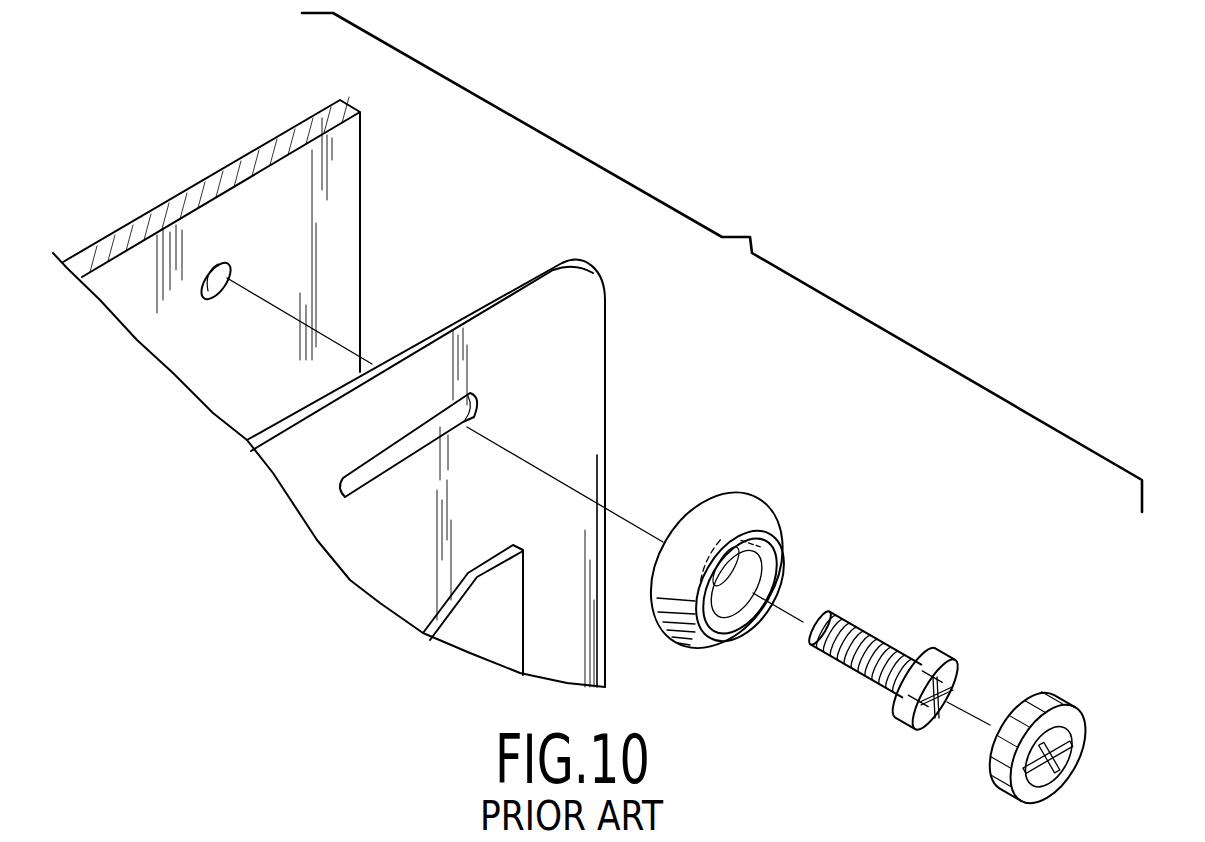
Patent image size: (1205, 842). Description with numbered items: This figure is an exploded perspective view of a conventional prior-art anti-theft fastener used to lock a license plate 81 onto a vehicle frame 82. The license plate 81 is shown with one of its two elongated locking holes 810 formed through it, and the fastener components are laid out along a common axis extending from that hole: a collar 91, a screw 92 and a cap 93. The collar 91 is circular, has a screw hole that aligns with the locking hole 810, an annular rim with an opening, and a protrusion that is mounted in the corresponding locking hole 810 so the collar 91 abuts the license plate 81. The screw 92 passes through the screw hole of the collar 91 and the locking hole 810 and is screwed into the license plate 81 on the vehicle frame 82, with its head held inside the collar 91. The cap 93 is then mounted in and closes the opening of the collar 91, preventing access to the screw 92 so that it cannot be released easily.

The license plate 81 is at (590, 325).
The vehicle frame 82 is at (343, 145).
The elongated locking hole 810 is at (478, 403).
The collar 91 is at (845, 547).
The screw 92 is at (954, 637).
The cap 93 is at (1114, 721).